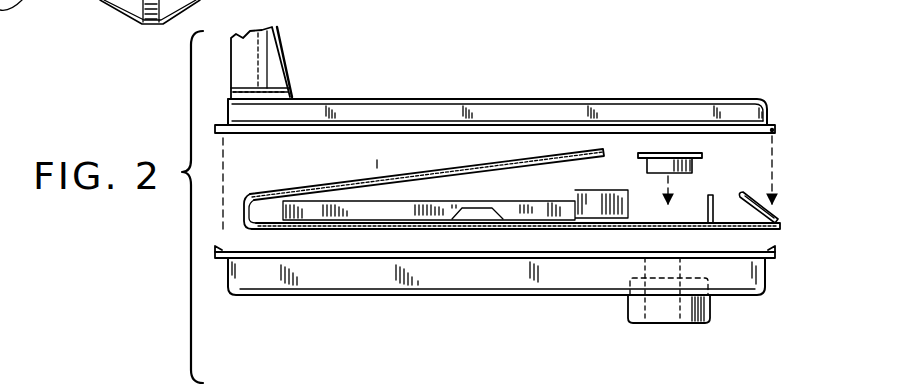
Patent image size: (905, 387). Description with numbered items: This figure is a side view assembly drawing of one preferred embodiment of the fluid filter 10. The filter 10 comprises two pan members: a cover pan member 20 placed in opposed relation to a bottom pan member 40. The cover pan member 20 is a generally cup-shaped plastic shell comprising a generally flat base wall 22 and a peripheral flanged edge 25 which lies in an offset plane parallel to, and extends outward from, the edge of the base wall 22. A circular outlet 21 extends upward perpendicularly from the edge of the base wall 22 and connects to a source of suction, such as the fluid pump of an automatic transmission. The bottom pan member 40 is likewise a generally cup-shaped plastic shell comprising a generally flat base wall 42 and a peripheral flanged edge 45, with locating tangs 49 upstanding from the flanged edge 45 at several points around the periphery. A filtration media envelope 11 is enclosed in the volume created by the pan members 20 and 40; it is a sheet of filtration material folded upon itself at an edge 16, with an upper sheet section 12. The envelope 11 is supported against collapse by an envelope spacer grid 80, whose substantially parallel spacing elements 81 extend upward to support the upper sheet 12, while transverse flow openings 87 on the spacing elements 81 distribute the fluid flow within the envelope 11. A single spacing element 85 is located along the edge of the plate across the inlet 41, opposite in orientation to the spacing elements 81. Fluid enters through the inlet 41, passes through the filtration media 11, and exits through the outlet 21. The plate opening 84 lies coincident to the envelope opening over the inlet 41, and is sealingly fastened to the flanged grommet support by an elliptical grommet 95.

The fluid filter 10 is at (592, 55).
The filtration media envelope 11 is at (377, 160).
The upper sheet section 12 is at (526, 198).
The folded edge 16 is at (244, 214).
The cover pan member 20 is at (413, 86).
The outlet 21 is at (256, 31).
The base wall 22 is at (475, 98).
The peripheral flanged edge 25 is at (773, 128).
The bottom pan member 40 is at (346, 306).
The inlet 41 is at (690, 323).
The base wall 42 is at (415, 296).
The peripheral flanged edge 45 is at (773, 259).
The locating tangs 49 is at (217, 258).
The envelope spacer grid 80 is at (504, 183).
The spacing elements 81 is at (548, 202).
The plate opening 84 is at (683, 219).
The single spacing element 85 is at (738, 192).
The transverse flow openings 87 is at (479, 221).
The elliptical grommet 95 is at (673, 153).